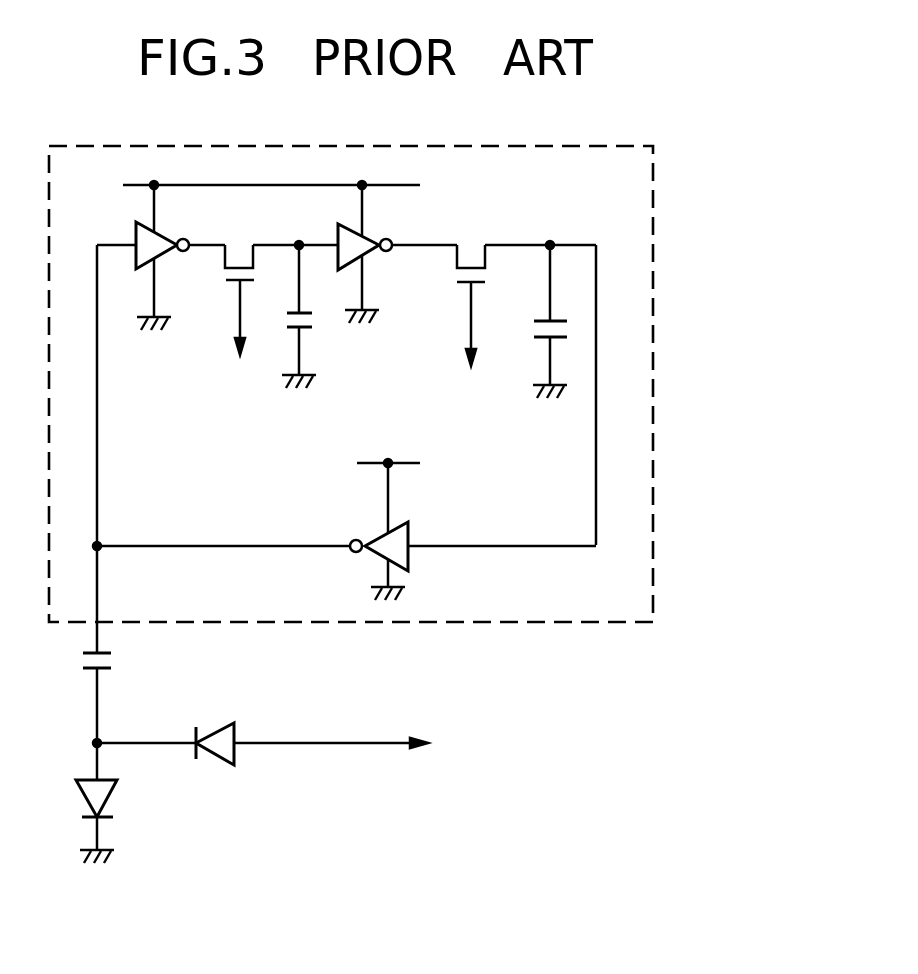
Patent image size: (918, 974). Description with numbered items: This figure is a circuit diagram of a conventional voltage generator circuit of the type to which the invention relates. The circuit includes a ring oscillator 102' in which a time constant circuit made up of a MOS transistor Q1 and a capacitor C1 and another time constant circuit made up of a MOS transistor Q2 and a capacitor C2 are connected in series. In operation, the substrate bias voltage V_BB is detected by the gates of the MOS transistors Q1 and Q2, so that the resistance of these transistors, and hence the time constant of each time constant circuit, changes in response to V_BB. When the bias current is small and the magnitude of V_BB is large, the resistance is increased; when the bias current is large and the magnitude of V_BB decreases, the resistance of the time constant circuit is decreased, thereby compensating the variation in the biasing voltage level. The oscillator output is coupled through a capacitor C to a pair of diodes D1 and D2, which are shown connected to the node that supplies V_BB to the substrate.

The ring oscillator 102' is at (398, 399).
The MOS transistor Q1 is at (249, 304).
The MOS transistor Q2 is at (472, 309).
The capacitor C1 is at (315, 316).
The capacitor C2 is at (560, 321).
The coupling capacitor C is at (82, 695).
The first diode D1 is at (295, 744).
The second diode D2 is at (120, 803).